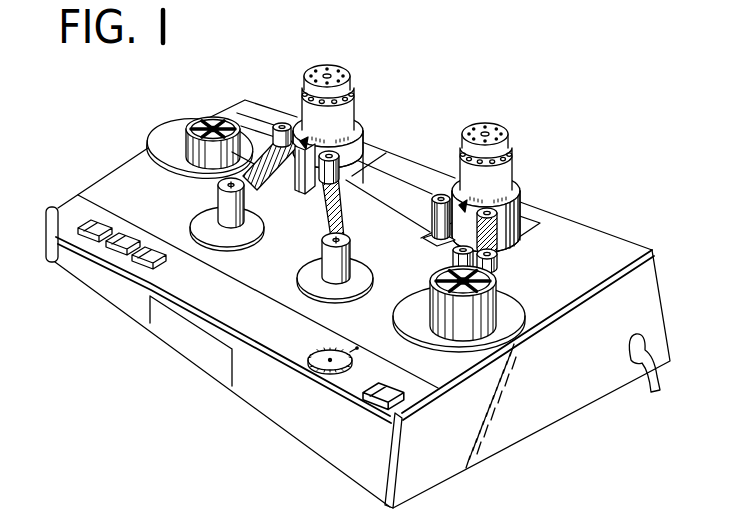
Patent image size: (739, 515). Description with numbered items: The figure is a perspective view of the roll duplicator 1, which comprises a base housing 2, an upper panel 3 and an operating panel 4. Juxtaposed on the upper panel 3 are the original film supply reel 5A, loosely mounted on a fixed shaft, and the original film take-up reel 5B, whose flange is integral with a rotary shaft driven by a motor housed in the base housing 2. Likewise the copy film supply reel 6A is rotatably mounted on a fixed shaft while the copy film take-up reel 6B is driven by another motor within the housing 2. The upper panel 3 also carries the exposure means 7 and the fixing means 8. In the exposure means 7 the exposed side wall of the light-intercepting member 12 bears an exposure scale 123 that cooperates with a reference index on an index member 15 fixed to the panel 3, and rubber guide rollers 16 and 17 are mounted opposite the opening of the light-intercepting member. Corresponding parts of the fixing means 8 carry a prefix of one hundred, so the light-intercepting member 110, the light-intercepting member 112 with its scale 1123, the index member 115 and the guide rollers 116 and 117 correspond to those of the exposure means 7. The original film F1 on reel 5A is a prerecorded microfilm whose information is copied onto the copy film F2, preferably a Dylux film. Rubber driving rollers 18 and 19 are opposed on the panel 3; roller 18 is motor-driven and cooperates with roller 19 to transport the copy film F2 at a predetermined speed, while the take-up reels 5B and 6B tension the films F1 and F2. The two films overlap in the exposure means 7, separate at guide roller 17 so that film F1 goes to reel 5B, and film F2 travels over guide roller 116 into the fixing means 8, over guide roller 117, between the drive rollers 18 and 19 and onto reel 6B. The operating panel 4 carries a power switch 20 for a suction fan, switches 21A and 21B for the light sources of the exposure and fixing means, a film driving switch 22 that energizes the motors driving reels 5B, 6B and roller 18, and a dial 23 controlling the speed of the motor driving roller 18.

The roll duplicator 1 is at (411, 116).
The base housing 2 is at (571, 394).
The upper panel 3 is at (578, 232).
The operating panel 4 is at (269, 341).
The original film supply reel 5A is at (242, 232).
The original film take-up reel 5B is at (352, 283).
The copy film supply reel 6A is at (160, 142).
The copy film take-up reel 6B is at (466, 338).
The exposure means 7 is at (333, 59).
The fixing means 8 is at (500, 119).
The light-intercepting member 12 is at (350, 101).
The exposure scale 123 is at (316, 142).
The index member 15 is at (299, 183).
The guide roller 16 is at (282, 122).
The guide roller 17 is at (331, 163).
The driving roller 18 is at (453, 251).
The driving roller 19 is at (487, 258).
The power switch 20 is at (96, 222).
The switch 21A is at (117, 245).
The switch 21B is at (145, 262).
The film driving switch 22 is at (400, 417).
The dial 23 is at (311, 358).
The light-intercepting member 110 is at (522, 196).
The light-intercepting member 112 is at (548, 148).
The exposure scale 1123 is at (480, 190).
The index member 115 is at (432, 218).
The guide roller 116 is at (440, 193).
The guide roller 117 is at (496, 218).
The original film F1 is at (254, 191).
The copy film F2 is at (247, 130).